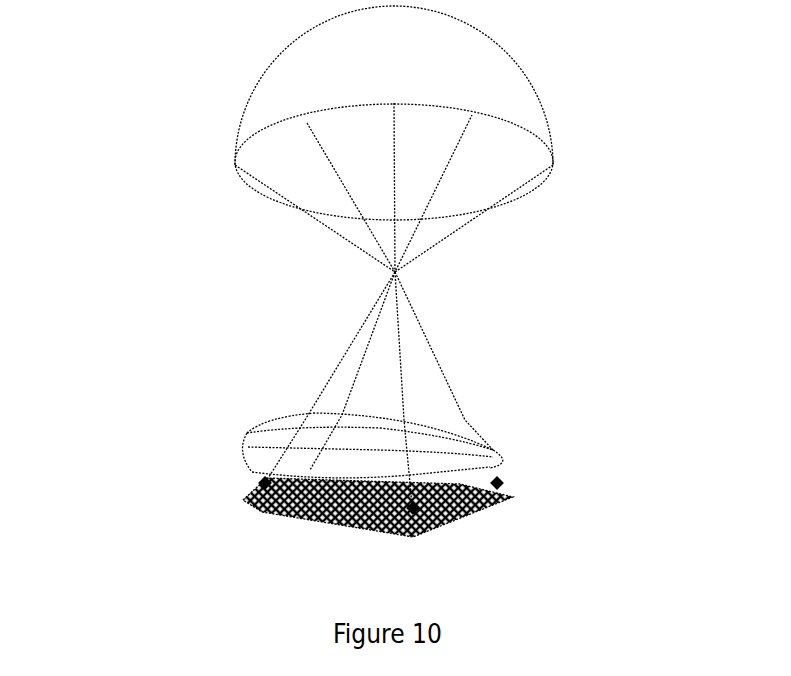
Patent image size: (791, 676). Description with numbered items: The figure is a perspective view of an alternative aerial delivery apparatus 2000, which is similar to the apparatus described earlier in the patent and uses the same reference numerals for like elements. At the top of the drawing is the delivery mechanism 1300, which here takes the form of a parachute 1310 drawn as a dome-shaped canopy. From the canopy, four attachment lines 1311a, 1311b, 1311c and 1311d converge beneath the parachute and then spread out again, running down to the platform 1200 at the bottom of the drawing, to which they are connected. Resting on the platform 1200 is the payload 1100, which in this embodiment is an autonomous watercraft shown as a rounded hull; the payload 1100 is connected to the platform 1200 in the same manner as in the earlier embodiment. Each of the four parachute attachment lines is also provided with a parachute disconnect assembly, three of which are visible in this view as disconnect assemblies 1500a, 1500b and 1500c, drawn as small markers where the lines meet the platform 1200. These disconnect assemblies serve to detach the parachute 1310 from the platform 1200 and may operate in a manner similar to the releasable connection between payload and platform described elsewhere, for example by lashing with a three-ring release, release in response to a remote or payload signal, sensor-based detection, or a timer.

The aerial delivery apparatus 2000 is at (216, 93).
The delivery mechanism 1300 is at (226, 169).
The parachute 1310 is at (507, 73).
The attachment line 1311a is at (423, 332).
The attachment line 1311b is at (403, 387).
The attachment line 1311c is at (338, 362).
The attachment line 1311d is at (372, 333).
The payload 1100 is at (495, 462).
The platform 1200 is at (463, 522).
The parachute disconnect assembly 1500a is at (500, 485).
The parachute disconnect assembly 1500b is at (412, 508).
The parachute disconnect assembly 1500c is at (262, 483).